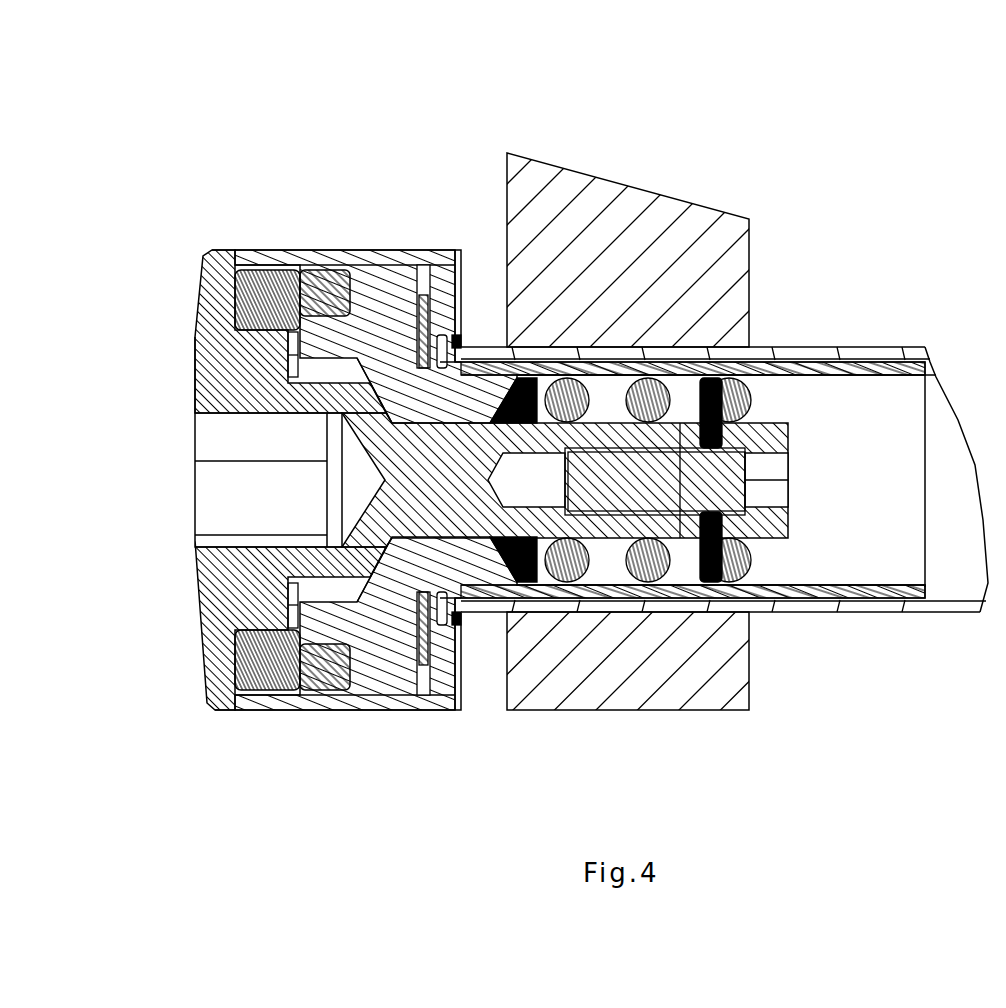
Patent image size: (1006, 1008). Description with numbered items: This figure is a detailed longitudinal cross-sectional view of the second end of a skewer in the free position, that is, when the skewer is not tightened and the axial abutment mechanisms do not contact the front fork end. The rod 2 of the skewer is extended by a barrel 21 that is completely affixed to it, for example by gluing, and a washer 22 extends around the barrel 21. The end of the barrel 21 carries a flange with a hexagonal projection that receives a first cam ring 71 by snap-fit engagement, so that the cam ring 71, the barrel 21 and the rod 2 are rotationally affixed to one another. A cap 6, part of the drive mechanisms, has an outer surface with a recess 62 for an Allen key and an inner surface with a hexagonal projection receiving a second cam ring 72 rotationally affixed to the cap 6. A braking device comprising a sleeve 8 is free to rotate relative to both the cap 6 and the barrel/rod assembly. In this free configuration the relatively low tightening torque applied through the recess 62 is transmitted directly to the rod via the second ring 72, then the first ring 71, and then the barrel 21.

The rod 2 is at (805, 617).
The cap 6 is at (193, 336).
The recess 62 is at (222, 461).
The sleeve 8 is at (304, 248).
The first cam ring 71 is at (334, 285).
The second cam ring 72 is at (270, 292).
The barrel 21 is at (393, 662).
The washer 22 is at (445, 602).